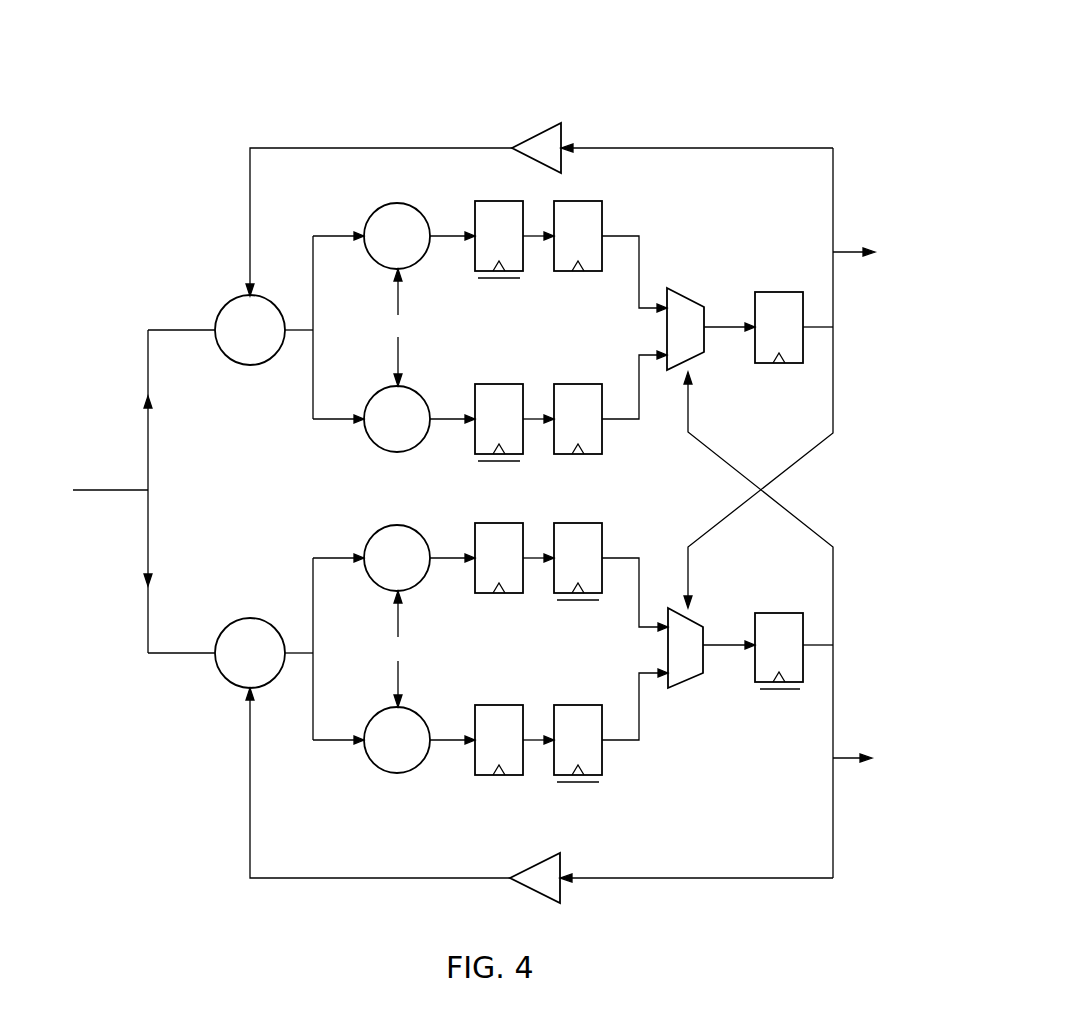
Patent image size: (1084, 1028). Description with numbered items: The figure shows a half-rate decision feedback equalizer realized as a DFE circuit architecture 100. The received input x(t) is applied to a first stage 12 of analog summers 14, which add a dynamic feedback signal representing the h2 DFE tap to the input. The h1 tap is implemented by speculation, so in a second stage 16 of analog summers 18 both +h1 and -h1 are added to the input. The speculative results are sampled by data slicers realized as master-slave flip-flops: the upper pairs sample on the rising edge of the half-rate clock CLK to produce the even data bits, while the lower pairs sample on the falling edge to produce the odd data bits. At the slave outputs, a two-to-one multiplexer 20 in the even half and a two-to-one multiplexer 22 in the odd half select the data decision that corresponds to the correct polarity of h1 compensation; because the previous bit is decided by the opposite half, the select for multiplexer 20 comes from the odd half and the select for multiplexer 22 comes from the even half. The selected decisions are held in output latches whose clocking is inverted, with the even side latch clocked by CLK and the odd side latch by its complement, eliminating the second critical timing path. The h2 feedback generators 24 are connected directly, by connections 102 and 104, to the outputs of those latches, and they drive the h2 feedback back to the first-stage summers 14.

The DFE circuit architecture 100 is at (530, 32).
The first stage of analog summers 12 is at (258, 378).
The analog summer 14 is at (225, 356).
The second stage of analog summers 16 is at (418, 460).
The analog summer 18 is at (421, 259).
The 2:1 multiplexer 20 is at (668, 374).
The 2:1 multiplexer 22 is at (690, 690).
The h2 feedback generator 24 is at (563, 127).
The direct connection 102 is at (640, 148).
The direct connection 104 is at (749, 878).